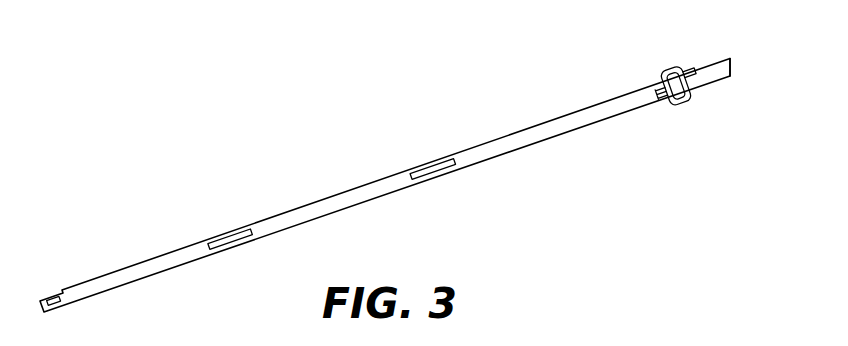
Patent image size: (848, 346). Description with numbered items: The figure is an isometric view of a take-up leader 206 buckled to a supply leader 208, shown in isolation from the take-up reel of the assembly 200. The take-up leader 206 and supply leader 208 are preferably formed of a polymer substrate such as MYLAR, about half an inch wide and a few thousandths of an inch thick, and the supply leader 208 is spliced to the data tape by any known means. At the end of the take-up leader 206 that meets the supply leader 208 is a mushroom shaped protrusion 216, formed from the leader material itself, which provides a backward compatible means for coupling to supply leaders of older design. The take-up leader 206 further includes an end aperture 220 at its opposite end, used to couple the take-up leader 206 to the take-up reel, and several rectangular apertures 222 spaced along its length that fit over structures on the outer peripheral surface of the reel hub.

The strip assembly 200 is at (694, 115).
The take-up leader 206 is at (580, 128).
The supply leader 208 is at (732, 79).
The mushroom shaped protrusion 216 is at (670, 70).
The end aperture 220 is at (50, 298).
The rectangular apertures 222 is at (234, 247).